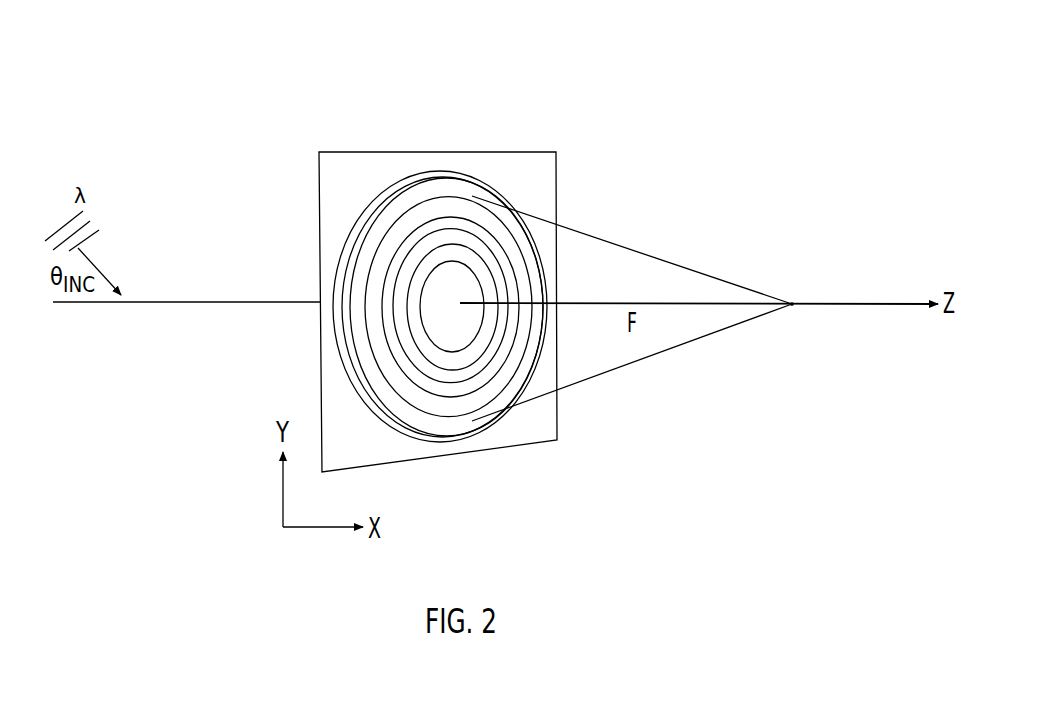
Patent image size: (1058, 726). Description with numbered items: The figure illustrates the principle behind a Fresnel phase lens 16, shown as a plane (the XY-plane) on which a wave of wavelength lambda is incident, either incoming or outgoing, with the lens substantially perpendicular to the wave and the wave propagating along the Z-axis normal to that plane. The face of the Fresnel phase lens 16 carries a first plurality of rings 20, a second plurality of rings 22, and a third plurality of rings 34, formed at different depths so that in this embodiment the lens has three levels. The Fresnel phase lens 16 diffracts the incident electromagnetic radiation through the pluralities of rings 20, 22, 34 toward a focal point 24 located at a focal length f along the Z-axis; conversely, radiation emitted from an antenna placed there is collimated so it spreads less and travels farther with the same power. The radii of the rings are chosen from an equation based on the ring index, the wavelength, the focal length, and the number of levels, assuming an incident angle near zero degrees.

The Fresnel phase lens 16 is at (223, 110).
The first plurality of rings 20 is at (431, 313).
The second plurality of rings 22 is at (414, 325).
The third plurality of rings 34 is at (407, 342).
The focal point 24 is at (792, 305).